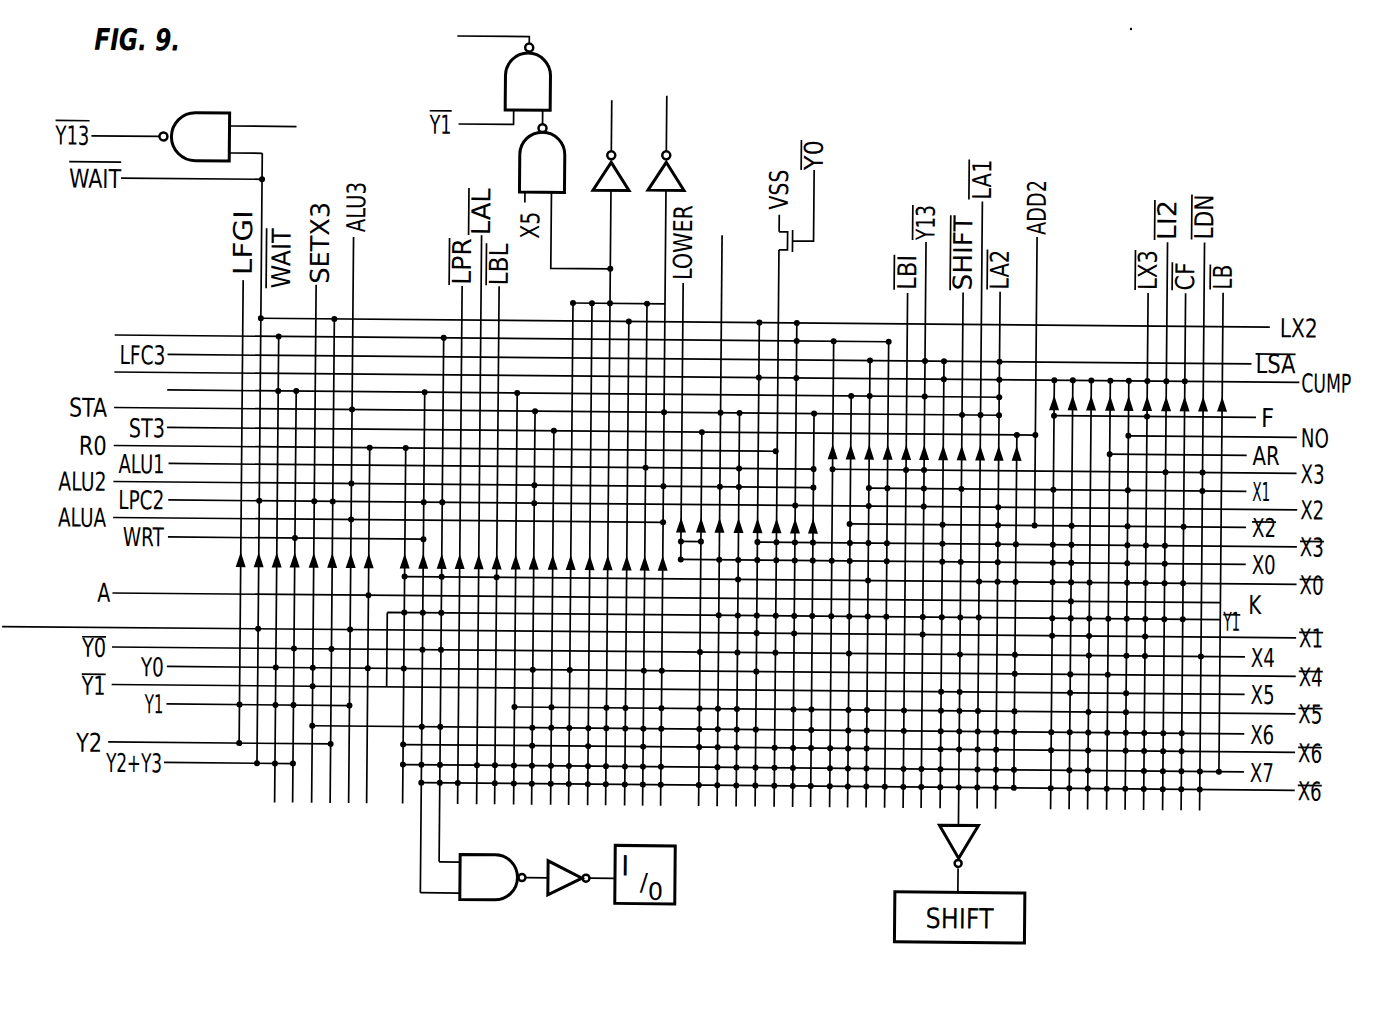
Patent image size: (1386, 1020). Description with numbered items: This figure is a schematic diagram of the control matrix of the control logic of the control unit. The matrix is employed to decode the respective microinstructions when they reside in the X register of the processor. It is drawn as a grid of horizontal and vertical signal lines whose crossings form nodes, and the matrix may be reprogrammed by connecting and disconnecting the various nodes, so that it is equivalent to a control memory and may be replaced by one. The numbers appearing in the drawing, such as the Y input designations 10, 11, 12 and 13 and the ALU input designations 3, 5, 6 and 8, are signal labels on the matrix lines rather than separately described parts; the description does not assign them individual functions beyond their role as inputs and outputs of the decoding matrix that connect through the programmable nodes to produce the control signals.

The Y10 control line 10 is at (483, 339).
The Y11 control line 11 is at (566, 394).
The Y12 control line 12 is at (688, 378).
The Y13 output line 13 is at (283, 126).
The ALU8 input line 8 is at (467, 37).
The ALU5 inverter input 5 is at (664, 426).
The ALU6 input column 6 is at (719, 493).
The ALU3 inverter input 3 is at (611, 120).